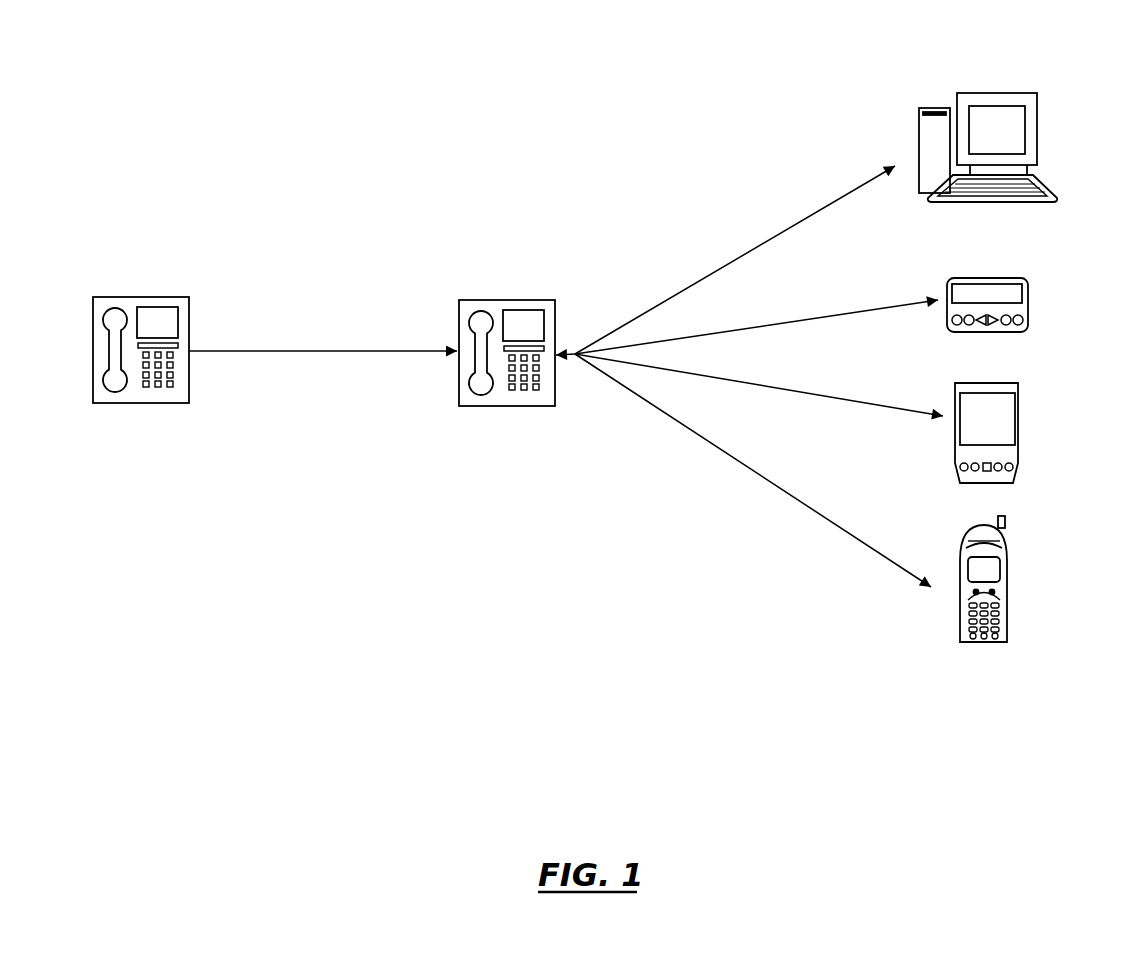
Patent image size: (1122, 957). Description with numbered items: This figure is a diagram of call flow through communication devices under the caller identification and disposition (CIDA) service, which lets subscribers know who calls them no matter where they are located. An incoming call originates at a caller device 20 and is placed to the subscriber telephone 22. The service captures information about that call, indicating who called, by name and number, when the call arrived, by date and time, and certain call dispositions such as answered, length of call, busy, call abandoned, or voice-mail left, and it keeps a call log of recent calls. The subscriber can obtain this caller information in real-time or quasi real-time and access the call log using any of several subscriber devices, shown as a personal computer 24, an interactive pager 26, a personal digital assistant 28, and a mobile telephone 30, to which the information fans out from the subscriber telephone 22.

The caller device 20 is at (160, 297).
The subscriber telephone 22 is at (527, 300).
The personal computer 24 is at (1017, 93).
The interactive pager 26 is at (1010, 278).
The personal digital assistant (PDA) 28 is at (1008, 383).
The mobile telephone 30 is at (1005, 530).